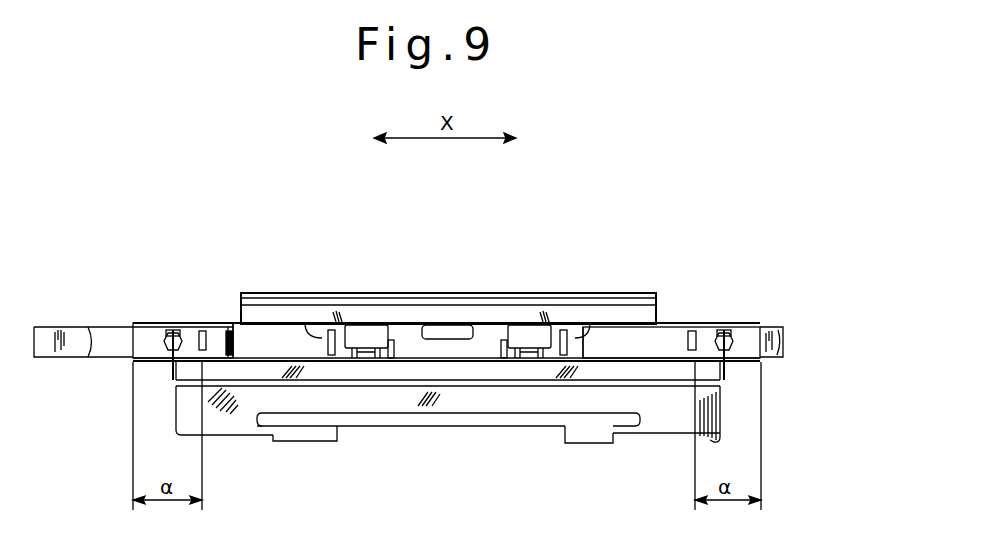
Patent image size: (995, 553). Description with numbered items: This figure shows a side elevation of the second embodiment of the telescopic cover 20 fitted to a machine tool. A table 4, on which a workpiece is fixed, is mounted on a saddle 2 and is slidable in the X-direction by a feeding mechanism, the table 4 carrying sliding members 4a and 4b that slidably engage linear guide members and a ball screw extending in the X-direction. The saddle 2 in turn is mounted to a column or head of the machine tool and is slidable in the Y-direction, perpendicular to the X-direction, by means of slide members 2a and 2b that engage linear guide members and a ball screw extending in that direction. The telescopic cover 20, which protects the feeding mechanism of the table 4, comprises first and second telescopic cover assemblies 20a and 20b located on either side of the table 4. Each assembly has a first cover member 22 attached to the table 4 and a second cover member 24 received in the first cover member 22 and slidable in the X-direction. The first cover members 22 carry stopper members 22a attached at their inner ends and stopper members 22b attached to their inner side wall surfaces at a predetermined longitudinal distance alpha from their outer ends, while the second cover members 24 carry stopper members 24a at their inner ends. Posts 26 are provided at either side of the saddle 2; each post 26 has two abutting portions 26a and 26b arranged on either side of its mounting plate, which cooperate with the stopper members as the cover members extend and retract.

The saddle 2 is at (176, 412).
The slide member 2a is at (273, 441).
The slide member 2b is at (583, 443).
The table 4 is at (426, 293).
The sliding member 4a is at (365, 335).
The sliding member 4b is at (520, 335).
The telescopic cover 20 is at (186, 224).
The first telescopic cover assembly 20a is at (108, 268).
The second telescopic cover assembly 20b is at (771, 222).
The first cover member 22 is at (163, 323).
The stopper member 22a is at (313, 328).
The stopper member 22b is at (202, 325).
The second cover member 24 is at (50, 327).
The stopper member 24a is at (220, 325).
The post 26 is at (170, 374).
The abutting portion 26a is at (172, 364).
The abutting portion 26b is at (163, 338).